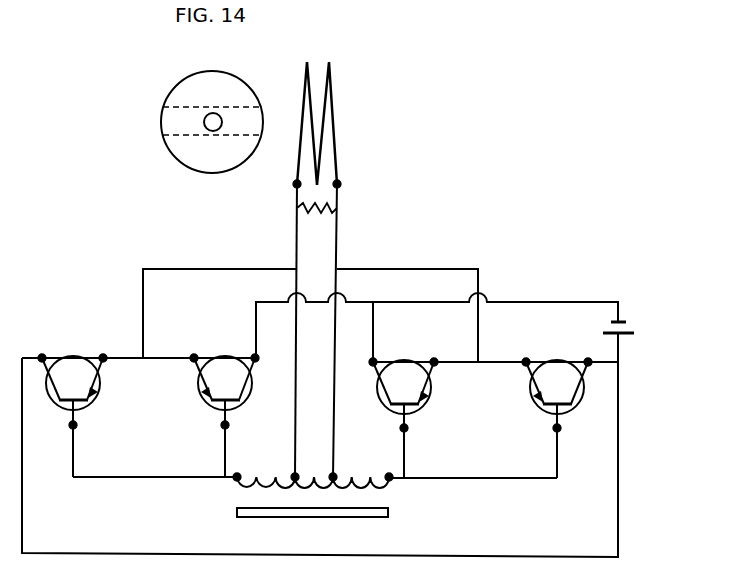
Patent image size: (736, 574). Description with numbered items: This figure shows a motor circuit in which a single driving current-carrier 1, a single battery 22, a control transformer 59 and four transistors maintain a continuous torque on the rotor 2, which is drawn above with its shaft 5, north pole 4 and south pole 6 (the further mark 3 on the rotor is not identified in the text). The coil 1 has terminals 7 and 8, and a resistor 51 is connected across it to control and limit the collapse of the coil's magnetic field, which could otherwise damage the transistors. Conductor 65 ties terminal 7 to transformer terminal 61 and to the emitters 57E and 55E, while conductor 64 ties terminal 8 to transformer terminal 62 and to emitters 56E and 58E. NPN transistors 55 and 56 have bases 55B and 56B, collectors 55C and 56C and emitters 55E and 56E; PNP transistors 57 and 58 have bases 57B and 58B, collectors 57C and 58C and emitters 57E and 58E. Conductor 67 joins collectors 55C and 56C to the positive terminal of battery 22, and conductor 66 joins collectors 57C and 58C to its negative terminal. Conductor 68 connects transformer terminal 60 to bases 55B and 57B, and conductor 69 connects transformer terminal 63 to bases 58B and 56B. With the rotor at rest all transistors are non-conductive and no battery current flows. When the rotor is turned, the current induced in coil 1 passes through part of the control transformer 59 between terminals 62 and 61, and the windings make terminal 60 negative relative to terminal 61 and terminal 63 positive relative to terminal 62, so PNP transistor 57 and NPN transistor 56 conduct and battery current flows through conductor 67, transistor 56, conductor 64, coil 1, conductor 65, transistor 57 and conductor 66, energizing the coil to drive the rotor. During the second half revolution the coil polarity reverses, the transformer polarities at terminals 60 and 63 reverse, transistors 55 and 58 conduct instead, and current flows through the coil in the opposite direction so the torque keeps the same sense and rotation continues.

The driving current-carrier 1 is at (329, 62).
The rotor 2 is at (202, 169).
The magnet pole section 3 is at (187, 115).
The north pole 4 is at (175, 133).
The shaft 5 is at (218, 114).
The south pole 6 is at (240, 133).
The terminal 7 is at (293, 185).
The terminal 8 is at (341, 185).
The battery 22 is at (630, 331).
The resistor 51 is at (316, 213).
The NPN transistor 55 is at (85, 401).
The base terminal 55B is at (75, 426).
The collector terminal 55C is at (43, 356).
The emitter terminal 55E is at (104, 356).
The NPN transistor 56 is at (545, 404).
The base terminal 56B is at (559, 429).
The collector terminal 56C is at (588, 361).
The emitter terminal 56E is at (527, 360).
The PNP transistor 57 is at (209, 401).
The base terminal 57B is at (227, 426).
The collector terminal 57C is at (254, 357).
The emitter terminal 57E is at (194, 356).
The PNP transistor 58 is at (416, 404).
The base terminal 58B is at (406, 429).
The collector terminal 58C is at (374, 360).
The emitter terminal 58E is at (435, 360).
The control transformer 59 is at (327, 518).
The terminal 60 is at (238, 476).
The terminal 61 is at (294, 476).
The terminal 62 is at (334, 476).
The terminal 63 is at (388, 476).
The conductor 64 is at (337, 250).
The conductor 65 is at (297, 242).
The conductor 66 is at (565, 303).
The conductor 67 is at (618, 515).
The conductor 68 is at (137, 477).
The conductor 69 is at (470, 479).